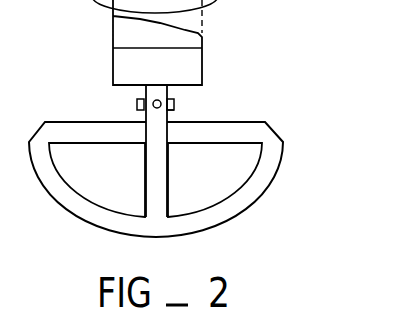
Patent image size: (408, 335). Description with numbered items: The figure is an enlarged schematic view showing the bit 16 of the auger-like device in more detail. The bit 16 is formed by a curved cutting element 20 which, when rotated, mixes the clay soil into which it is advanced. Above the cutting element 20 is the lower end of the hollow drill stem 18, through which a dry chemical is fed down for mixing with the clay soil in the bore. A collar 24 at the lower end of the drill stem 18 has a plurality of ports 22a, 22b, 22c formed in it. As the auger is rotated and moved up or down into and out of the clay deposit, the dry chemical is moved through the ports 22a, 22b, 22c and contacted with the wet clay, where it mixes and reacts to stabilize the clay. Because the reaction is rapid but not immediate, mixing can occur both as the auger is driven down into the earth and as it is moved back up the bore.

The bit 16 is at (262, 210).
The hollow drill stem 18 is at (202, 40).
The curved cutting element 20 is at (78, 215).
The port 22a is at (133, 103).
The port 22b is at (174, 99).
The port 22c is at (175, 105).
The collar 24 is at (143, 94).